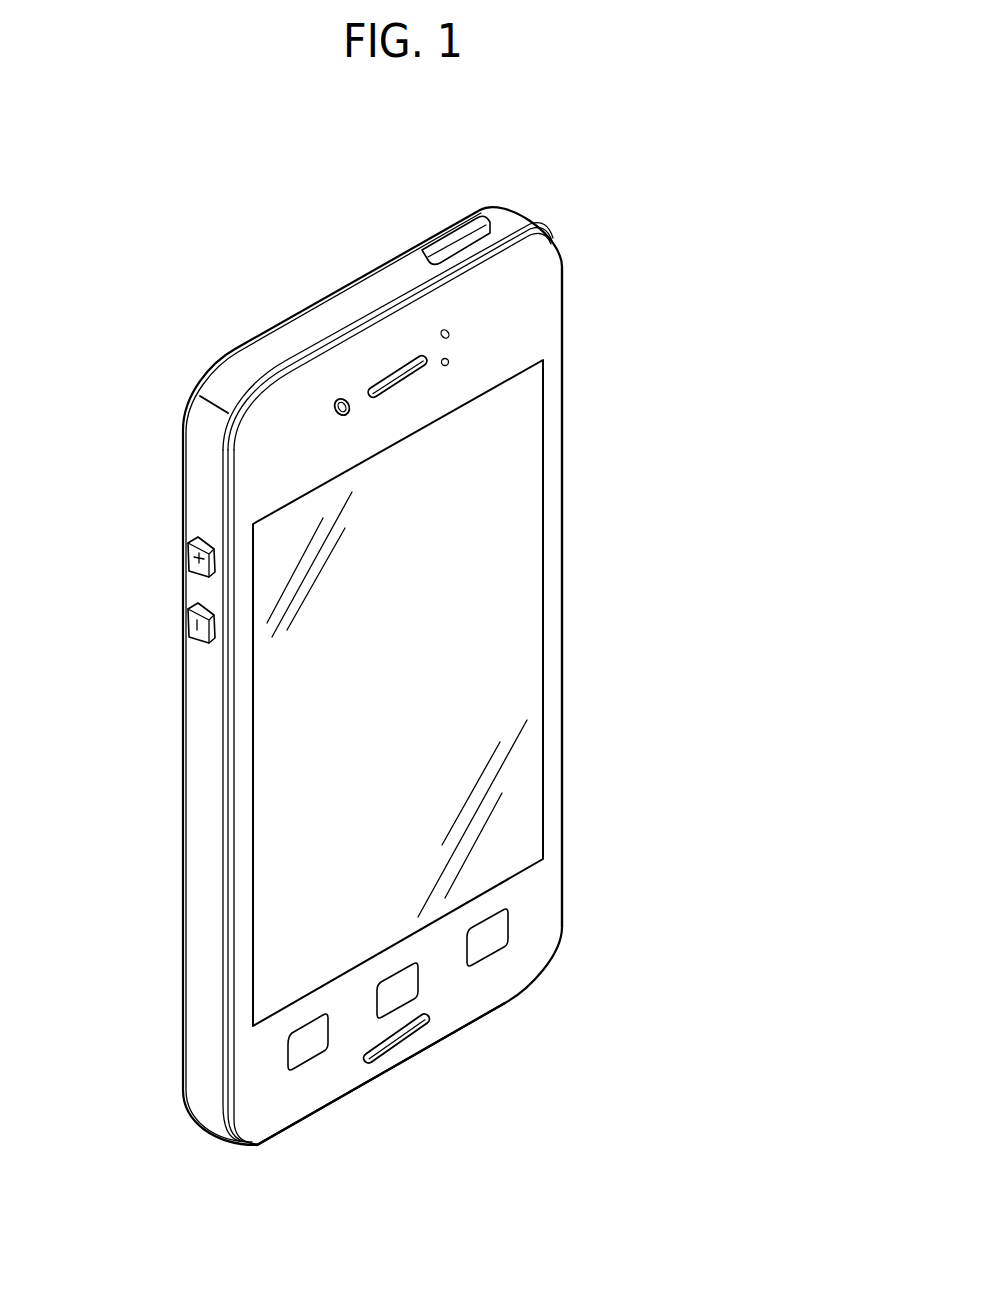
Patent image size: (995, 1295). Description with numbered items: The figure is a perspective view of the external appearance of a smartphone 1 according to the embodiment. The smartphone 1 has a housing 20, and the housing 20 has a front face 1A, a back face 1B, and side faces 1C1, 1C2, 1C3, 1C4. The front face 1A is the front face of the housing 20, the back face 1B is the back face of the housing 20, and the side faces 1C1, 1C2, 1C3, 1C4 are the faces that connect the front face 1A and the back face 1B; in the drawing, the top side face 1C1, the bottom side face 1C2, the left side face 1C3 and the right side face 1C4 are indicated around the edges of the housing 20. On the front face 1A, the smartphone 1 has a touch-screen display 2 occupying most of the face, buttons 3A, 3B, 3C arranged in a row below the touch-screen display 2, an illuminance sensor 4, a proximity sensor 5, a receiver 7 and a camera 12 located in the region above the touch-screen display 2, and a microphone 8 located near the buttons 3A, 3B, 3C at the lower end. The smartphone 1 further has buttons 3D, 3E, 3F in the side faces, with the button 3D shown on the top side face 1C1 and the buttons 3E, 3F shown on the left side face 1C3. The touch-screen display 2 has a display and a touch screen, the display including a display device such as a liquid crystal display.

The smartphone 1 is at (675, 291).
The front face 1A is at (277, 413).
The back face 1B is at (180, 465).
The side face 1C1 is at (383, 282).
The side face 1C2 is at (462, 1033).
The side face 1C3 is at (197, 873).
The side face 1C4 is at (563, 477).
The touch-screen display 2 is at (522, 672).
The button 3A is at (307, 1047).
The button 3B is at (398, 997).
The button 3C is at (490, 938).
The button 3D is at (458, 240).
The button 3E is at (190, 562).
The button 3F is at (192, 628).
The illuminance sensor 4 is at (447, 330).
The proximity sensor 5 is at (449, 362).
The receiver 7 is at (387, 377).
The microphone 8 is at (383, 1042).
The camera 12 is at (343, 397).
The housing 20 is at (197, 498).